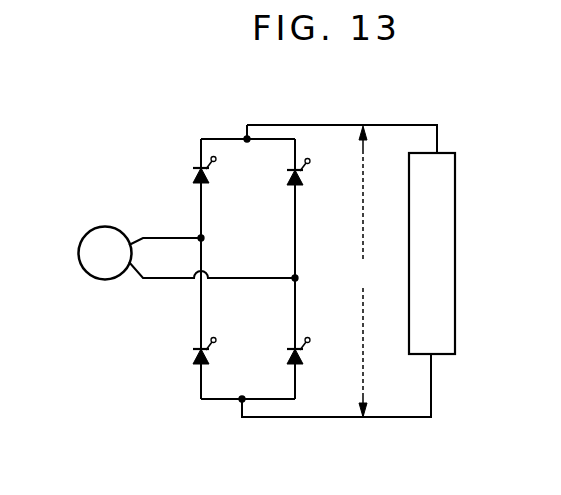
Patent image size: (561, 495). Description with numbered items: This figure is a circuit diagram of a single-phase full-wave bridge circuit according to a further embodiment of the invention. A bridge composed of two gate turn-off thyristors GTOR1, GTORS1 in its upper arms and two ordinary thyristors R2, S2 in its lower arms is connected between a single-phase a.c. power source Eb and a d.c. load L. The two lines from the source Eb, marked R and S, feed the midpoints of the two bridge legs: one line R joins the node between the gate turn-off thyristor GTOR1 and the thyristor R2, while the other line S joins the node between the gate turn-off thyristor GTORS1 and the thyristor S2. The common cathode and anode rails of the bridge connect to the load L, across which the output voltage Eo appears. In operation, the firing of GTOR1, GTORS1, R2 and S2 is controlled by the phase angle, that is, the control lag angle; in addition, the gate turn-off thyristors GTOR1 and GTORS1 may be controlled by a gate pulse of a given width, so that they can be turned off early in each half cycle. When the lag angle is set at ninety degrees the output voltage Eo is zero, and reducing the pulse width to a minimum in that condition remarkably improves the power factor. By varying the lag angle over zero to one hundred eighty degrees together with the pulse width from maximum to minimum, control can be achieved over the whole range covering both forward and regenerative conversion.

The single-phase a.c. power source Eb is at (105, 253).
The R phase line R is at (172, 228).
The S phase line S is at (171, 266).
The gate turn-off thyristor GTOR1 is at (165, 174).
The gate turn-off thyristor GTORS1 is at (285, 182).
The thyristor R2 is at (193, 351).
The thyristor S2 is at (285, 357).
The d.c. load L is at (455, 176).
The output voltage Eo is at (362, 271).